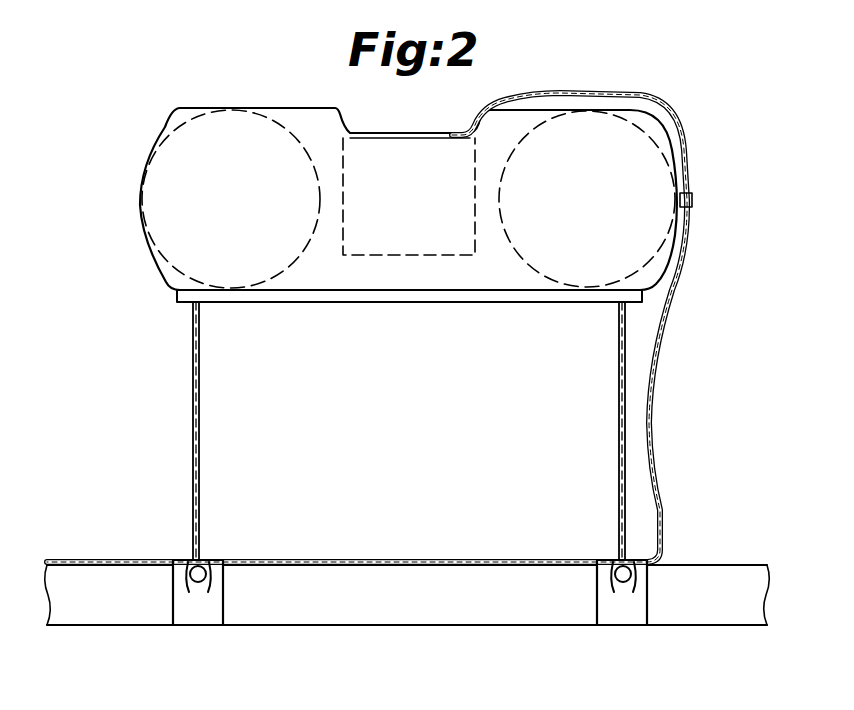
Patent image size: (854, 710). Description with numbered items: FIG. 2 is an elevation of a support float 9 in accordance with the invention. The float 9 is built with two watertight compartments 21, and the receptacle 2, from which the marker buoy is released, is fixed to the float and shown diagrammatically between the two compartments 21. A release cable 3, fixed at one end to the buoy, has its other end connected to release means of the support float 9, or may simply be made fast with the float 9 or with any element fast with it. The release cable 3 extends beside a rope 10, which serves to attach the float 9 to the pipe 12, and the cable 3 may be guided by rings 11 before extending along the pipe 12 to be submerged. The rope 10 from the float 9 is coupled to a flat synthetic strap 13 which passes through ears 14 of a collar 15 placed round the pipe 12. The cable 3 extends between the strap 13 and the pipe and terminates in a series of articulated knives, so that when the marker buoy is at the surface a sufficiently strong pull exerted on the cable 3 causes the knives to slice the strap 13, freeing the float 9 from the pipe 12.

The receptacle 2 is at (401, 134).
The release cable 3 is at (655, 452).
The support float 9 is at (165, 129).
The rope 10 is at (619, 426).
The rings 11 is at (693, 198).
The pipe 12 is at (712, 578).
The flat synthetic strap 13 is at (195, 566).
The ears 14 is at (196, 581).
The collar 15 is at (205, 628).
The watertight compartments 21 is at (170, 219).